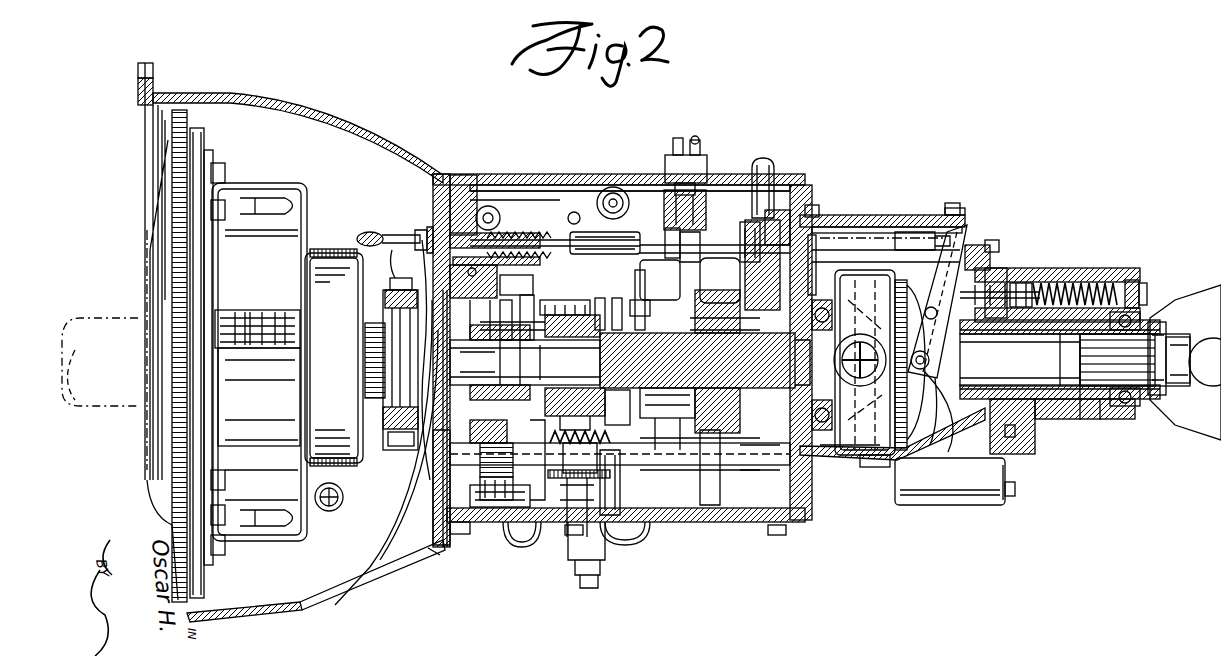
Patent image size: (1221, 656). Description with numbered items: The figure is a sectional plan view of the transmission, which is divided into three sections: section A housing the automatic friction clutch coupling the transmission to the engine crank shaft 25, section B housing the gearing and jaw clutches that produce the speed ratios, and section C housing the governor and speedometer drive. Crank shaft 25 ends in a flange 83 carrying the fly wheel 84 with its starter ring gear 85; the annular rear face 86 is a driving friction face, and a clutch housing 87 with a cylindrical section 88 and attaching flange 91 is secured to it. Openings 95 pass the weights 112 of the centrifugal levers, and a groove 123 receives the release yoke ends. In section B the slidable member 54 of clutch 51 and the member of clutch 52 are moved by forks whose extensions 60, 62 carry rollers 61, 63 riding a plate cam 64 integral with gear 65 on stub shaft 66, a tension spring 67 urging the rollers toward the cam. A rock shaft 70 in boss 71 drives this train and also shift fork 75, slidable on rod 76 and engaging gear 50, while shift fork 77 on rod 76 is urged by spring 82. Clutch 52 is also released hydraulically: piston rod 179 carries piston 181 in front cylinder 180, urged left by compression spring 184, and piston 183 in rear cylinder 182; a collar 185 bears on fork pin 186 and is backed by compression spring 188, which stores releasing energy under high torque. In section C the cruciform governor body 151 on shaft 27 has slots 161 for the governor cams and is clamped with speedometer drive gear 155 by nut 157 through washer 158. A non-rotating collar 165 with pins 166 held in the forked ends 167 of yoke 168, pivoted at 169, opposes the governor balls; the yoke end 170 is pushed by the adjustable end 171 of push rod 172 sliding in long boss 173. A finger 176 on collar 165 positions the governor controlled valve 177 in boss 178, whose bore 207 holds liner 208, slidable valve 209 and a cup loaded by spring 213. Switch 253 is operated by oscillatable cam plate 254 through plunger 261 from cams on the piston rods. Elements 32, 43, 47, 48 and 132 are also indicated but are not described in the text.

The crank shaft 25 is at (96, 290).
The shaft 27 is at (730, 370).
The gear 32 is at (680, 398).
The housing wall 43 is at (465, 438).
The clutch sleeve 47 is at (440, 430).
The gear 48 is at (570, 318).
The gear 50 is at (725, 311).
The clutch 51 is at (530, 300).
The clutch 52 is at (614, 303).
The slidable member 54 is at (525, 362).
The extension 60 is at (490, 460).
The roller 61 is at (525, 525).
The extension 62 is at (695, 425).
The roller 63 is at (652, 520).
The plate cam 64 is at (610, 550).
The gear 65 is at (552, 520).
The stub shaft 66 is at (572, 545).
The tension spring 67 is at (575, 409).
The rock shaft 70 is at (598, 580).
The boss 71 is at (582, 568).
The shift fork 75 is at (748, 515).
The rod 76 is at (748, 455).
The shift fork 77 is at (512, 430).
The spring 82 is at (545, 520).
The flange 83 is at (142, 282).
The fly wheel 84 is at (165, 175).
The starter ring gear 85 is at (178, 118).
The rear face 86 is at (200, 130).
The clutch housing 87 is at (272, 183).
The cylindrical section 88 is at (350, 450).
The attaching flange 91 is at (210, 172).
The openings 95 is at (270, 322).
The weight 112 is at (238, 322).
The groove 123 is at (398, 352).
The release plate 132 is at (338, 250).
The governor body 151 is at (840, 445).
The speedometer drive gear 155 is at (1085, 402).
The nut 157 is at (1172, 335).
The washer 158 is at (1178, 395).
The slot 161 is at (895, 392).
The collar 165 is at (945, 372).
The pins 166 is at (938, 448).
The forked ends 167 is at (960, 385).
The yoke 168 is at (945, 305).
The pivot 169 is at (955, 322).
The end 170 is at (962, 245).
The adjustable end 171 is at (952, 242).
The push rod 172 is at (905, 245).
The boss 173 is at (732, 282).
The finger 176 is at (985, 265).
The governor controlled valve 177 is at (1040, 282).
The boss 178 is at (1130, 268).
The piston rod 179 is at (718, 240).
The cylinder 180 is at (420, 262).
The piston 181 is at (440, 222).
The cylinder 182 is at (778, 218).
The piston 183 is at (785, 232).
The compression spring 184 is at (512, 232).
The collar 185 is at (590, 257).
The pin 186 is at (650, 272).
The compression spring 188 is at (545, 236).
The bore 207 is at (1102, 278).
The liner 208 is at (1022, 272).
The valve 209 is at (955, 340).
The spring 213 is at (1140, 278).
The switch 253 is at (668, 157).
The cam plate 254 is at (690, 245).
The plunger 261 is at (672, 220).
The section A is at (276, 97).
The section B is at (547, 162).
The section C is at (986, 197).